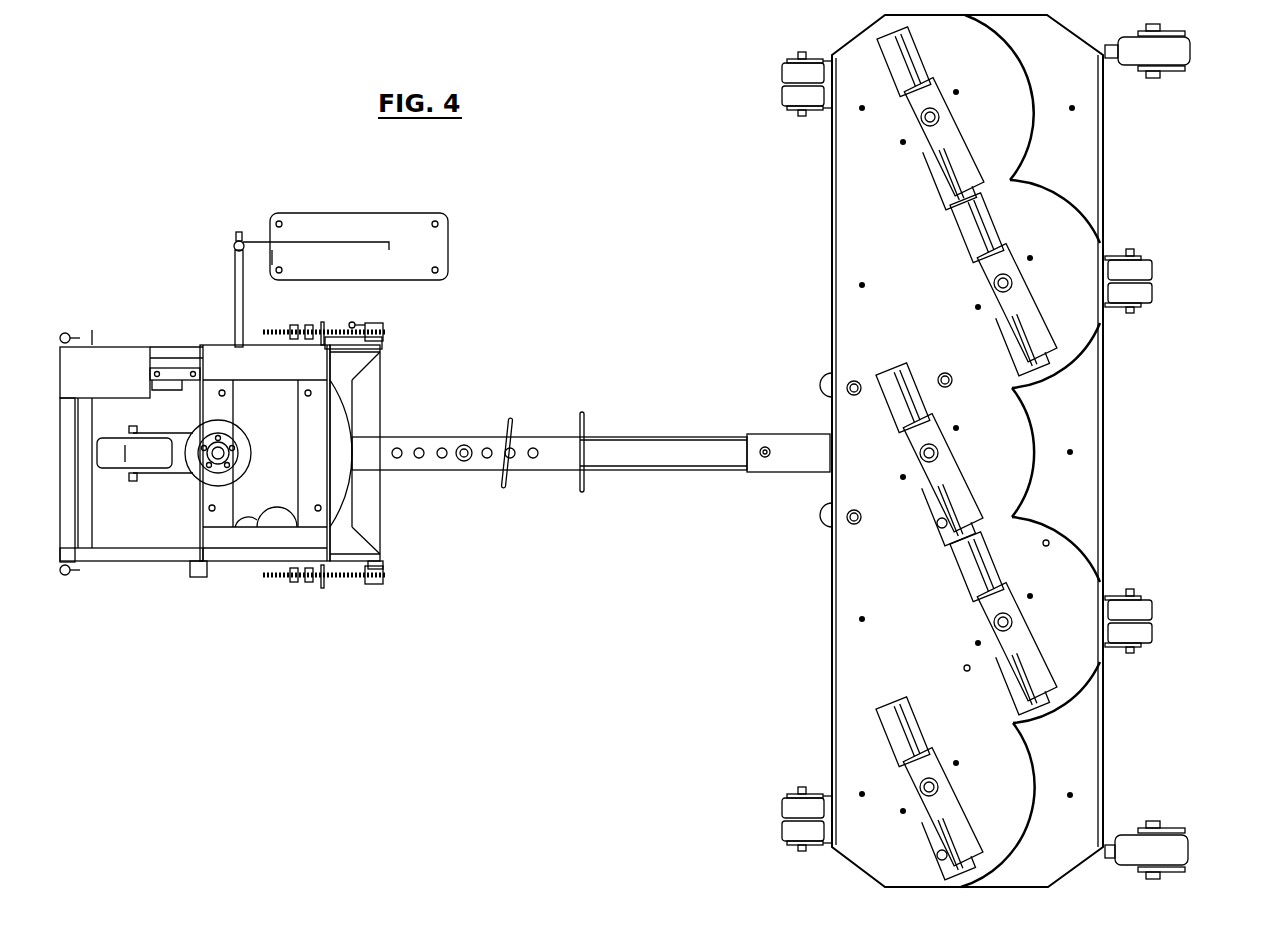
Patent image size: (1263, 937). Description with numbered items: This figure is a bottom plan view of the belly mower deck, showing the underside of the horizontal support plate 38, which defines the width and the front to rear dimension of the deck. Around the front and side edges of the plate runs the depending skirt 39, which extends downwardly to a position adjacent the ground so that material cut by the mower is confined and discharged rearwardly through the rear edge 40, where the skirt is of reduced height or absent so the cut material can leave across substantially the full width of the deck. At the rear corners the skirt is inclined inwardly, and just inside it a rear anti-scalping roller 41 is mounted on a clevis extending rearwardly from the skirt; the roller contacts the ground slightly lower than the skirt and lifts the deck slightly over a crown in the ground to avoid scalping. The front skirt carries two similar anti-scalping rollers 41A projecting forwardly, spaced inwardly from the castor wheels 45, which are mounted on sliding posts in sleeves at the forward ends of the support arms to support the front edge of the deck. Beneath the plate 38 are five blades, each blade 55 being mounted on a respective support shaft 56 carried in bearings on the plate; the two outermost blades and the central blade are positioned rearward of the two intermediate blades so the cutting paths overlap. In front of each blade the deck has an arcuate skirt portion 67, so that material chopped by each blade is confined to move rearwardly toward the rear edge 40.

The horizontal support plate 38 is at (866, 654).
The depending skirt 39 is at (1105, 522).
The rear edge 40 is at (824, 282).
The rear anti-scalping roller 41 is at (782, 815).
The anti-scalping roller 41A is at (1165, 620).
The castor wheel 45 is at (1177, 848).
The blade 55 is at (1037, 665).
The support shaft 56 is at (945, 785).
The arcuate skirt portion 67 is at (1085, 547).